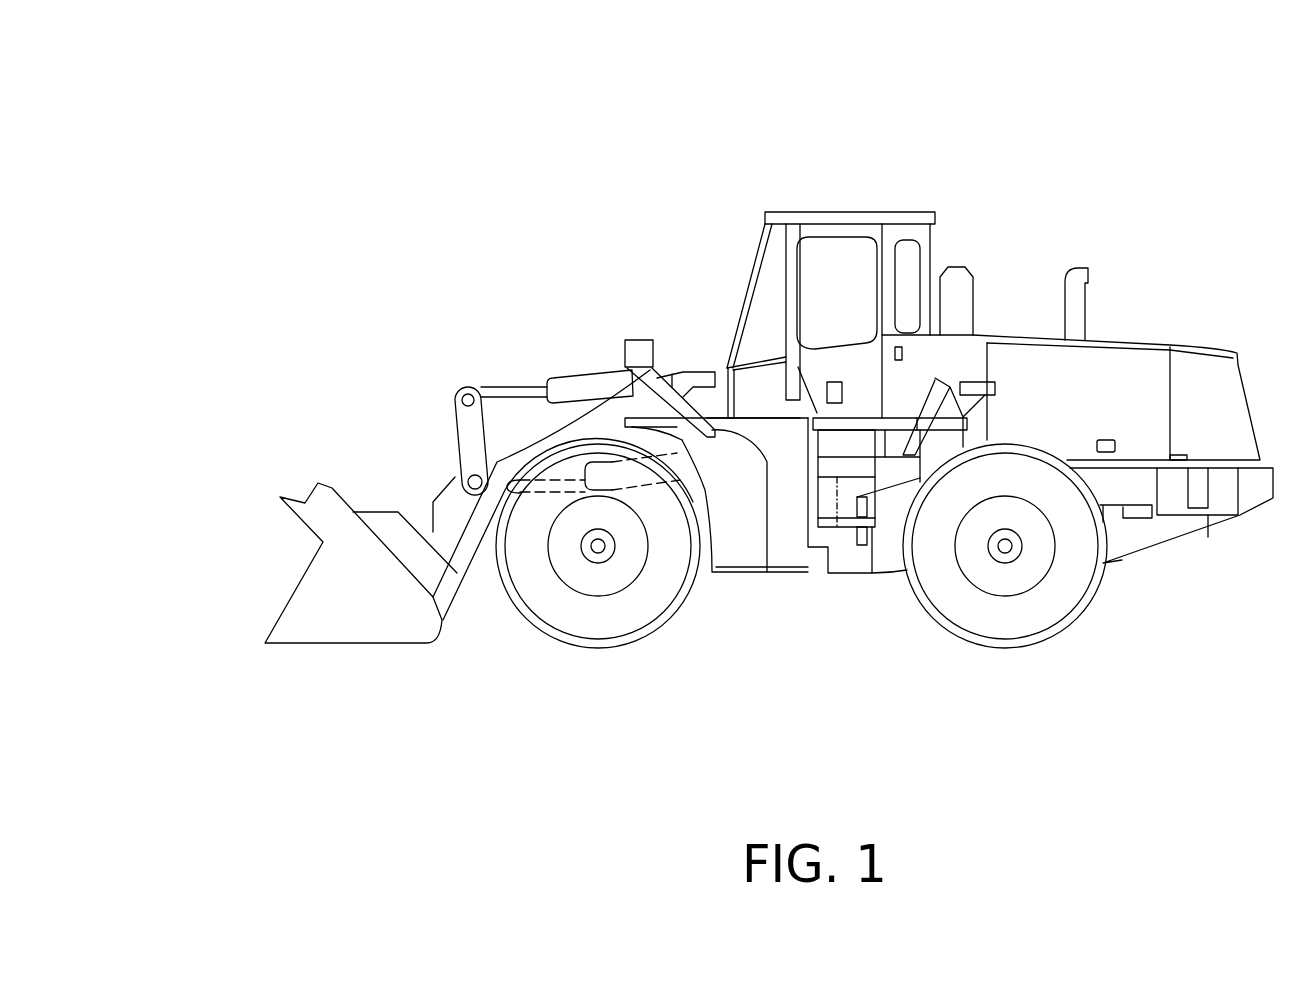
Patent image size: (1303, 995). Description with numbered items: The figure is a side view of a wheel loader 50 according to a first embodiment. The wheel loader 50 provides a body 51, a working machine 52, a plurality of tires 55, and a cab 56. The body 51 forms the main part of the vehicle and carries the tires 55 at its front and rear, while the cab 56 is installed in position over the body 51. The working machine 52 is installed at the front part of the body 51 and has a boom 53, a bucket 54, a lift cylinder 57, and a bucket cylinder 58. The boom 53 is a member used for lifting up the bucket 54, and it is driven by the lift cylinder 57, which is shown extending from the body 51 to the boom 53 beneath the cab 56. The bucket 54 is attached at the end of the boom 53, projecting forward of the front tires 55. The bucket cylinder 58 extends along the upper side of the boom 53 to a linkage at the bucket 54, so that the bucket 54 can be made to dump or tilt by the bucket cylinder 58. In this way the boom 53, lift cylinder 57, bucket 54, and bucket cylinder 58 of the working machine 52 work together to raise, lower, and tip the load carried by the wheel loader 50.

The wheel loader 50 is at (1183, 100).
The body 51 is at (1013, 287).
The working machine 52 is at (368, 357).
The boom 53 is at (543, 443).
The bucket 54 is at (290, 497).
The tires 55 is at (605, 623).
The cab 56 is at (858, 198).
The lift cylinder 57 is at (593, 457).
The bucket cylinder 58 is at (497, 398).